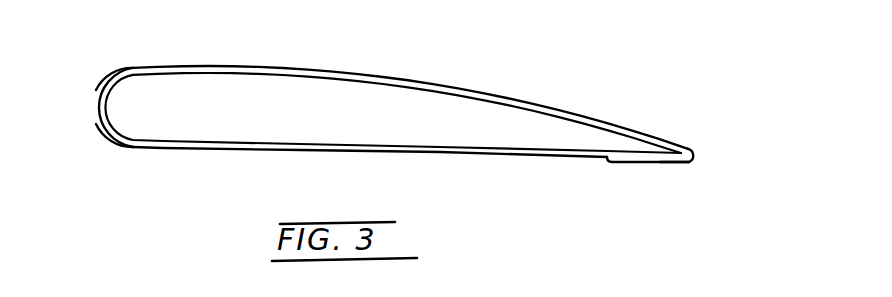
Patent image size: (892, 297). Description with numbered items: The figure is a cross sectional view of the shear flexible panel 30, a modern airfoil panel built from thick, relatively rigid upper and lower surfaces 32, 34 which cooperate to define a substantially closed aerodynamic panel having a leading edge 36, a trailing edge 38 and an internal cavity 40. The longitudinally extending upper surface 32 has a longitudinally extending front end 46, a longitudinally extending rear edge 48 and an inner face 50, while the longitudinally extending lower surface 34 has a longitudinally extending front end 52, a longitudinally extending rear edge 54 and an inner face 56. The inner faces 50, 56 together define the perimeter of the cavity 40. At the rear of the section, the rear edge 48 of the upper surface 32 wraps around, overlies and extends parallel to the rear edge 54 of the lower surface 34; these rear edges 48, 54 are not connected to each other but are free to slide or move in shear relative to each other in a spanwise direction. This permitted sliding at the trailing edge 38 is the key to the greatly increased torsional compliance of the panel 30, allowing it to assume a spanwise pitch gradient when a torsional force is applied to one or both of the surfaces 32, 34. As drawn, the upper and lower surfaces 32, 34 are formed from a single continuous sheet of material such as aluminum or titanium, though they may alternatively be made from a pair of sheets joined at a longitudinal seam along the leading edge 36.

The shear flexible panel 30 is at (581, 74).
The upper surface 32 is at (297, 72).
The lower surface 34 is at (272, 152).
The leading edge 36 is at (92, 107).
The trailing edge 38 is at (691, 147).
The internal cavity 40 is at (452, 134).
The front end of upper surface 46 is at (109, 79).
The rear edge of upper surface 48 is at (678, 164).
The inner face of upper surface 50 is at (250, 77).
The front end of lower surface 52 is at (117, 132).
The rear edge of lower surface 54 is at (640, 151).
The inner face of lower surface 56 is at (317, 142).